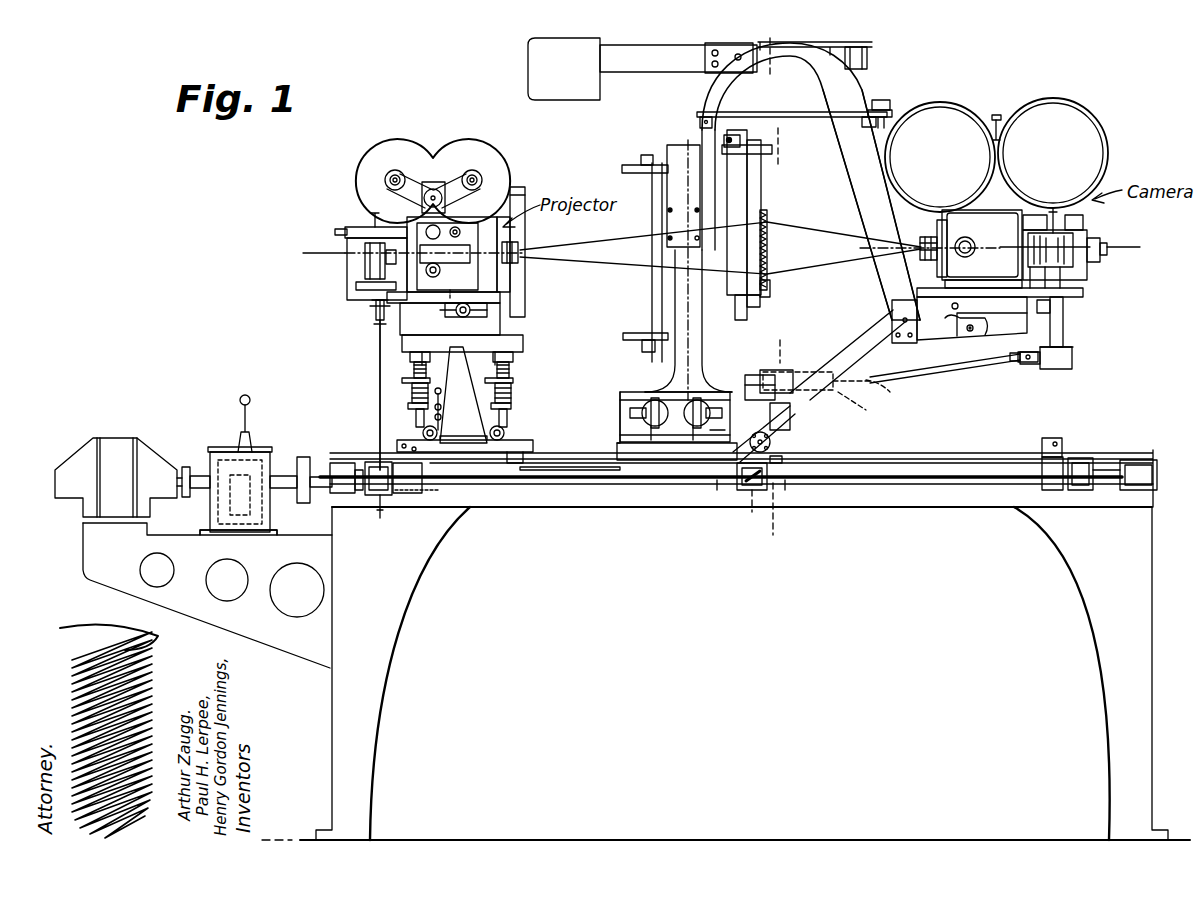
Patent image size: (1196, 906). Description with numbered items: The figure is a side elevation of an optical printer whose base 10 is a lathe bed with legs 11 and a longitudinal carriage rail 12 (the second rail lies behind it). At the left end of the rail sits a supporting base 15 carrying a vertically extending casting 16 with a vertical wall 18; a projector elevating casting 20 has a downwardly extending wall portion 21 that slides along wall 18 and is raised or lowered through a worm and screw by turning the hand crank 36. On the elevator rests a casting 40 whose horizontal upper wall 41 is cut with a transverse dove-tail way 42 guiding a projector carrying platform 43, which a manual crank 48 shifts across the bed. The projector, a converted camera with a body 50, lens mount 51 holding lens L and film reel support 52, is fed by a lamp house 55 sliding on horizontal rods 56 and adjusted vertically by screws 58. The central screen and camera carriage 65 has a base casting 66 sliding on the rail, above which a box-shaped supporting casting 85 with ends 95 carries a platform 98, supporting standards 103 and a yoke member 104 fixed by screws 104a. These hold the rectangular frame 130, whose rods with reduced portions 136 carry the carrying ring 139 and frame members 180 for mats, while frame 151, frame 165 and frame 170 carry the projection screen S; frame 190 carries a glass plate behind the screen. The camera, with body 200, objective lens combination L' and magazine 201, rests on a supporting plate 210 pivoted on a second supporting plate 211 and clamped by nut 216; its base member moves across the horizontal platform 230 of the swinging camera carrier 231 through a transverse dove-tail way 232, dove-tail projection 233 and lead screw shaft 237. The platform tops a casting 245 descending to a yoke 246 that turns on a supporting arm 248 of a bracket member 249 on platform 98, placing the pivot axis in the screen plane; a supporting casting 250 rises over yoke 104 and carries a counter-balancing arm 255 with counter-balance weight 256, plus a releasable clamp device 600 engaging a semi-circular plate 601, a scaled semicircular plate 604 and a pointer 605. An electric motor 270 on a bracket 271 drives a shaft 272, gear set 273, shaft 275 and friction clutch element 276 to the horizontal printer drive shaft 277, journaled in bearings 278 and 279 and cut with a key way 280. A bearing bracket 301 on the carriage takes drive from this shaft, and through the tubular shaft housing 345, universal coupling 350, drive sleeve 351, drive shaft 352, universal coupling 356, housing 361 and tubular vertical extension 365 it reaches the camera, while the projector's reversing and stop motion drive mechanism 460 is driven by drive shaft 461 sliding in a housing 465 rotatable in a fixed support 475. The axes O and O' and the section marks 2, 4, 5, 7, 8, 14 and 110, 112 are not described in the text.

The base of the printer 10 is at (1126, 442).
The legs 11 is at (392, 610).
The carriage rail 12 is at (980, 466).
The section line 14 is at (371, 428).
The supporting base 15 is at (535, 445).
The vertically extending casting 16 is at (443, 393).
The vertical wall 18 is at (779, 131).
The section line 2 is at (419, 361).
The projector elevating casting 20 is at (524, 346).
The downwardly extending wall portion 21 is at (458, 352).
The hand crank 36 is at (442, 417).
The section line 4 is at (497, 284).
The casting 40 is at (414, 324).
The horizontal upper wall 41 is at (372, 305).
The transverse dove-tail way 42 is at (500, 294).
The projector carrying platform 43 is at (376, 326).
The manual crank 48 is at (470, 306).
The section line 5 is at (762, 43).
The body 50 is at (373, 212).
The lens mount 51 is at (519, 240).
The film reel support 52 is at (421, 148).
The lamp house 55 is at (539, 192).
The parallel horizontal rods 56 is at (436, 445).
The screws 58 is at (410, 404).
The central screen and camera carriage 65 is at (612, 393).
The base casting 66 is at (656, 432).
The section line 7 is at (745, 516).
The section line 8 is at (714, 486).
The supporting casting 85 is at (708, 494).
The ends 95 is at (620, 423).
The platform 98 is at (641, 381).
The supporting standards 103 is at (673, 302).
The yoke member 104 is at (725, 91).
The screws 104a is at (697, 212).
The adjusting screw 110 is at (690, 430).
The adjusting screw 112 is at (711, 434).
The rectangular frame 130 is at (677, 156).
The reduced portions 136 is at (773, 150).
The carrying ring 139 is at (735, 186).
The frame 151 is at (755, 319).
The rectangular frame 165 is at (760, 306).
The rectangular frame 170 is at (771, 283).
The frame members 180 is at (717, 177).
The frame 190 is at (652, 283).
The body 200 is at (979, 249).
The magazine 201 is at (1073, 103).
The supporting plate 210 is at (893, 287).
The second supporting plate 211 is at (897, 302).
The clamping nut 216 is at (1064, 309).
The horizontal platform 230 is at (1003, 355).
The swinging camera carrier 231 is at (878, 314).
The transverse dove-tail way 232 is at (943, 318).
The dove-tail projection 233 is at (1007, 324).
The lead screw shaft 237 is at (968, 330).
The casting 245 is at (866, 377).
The yoke 246 is at (803, 420).
The supporting arm 248 is at (795, 432).
The bracket member 249 is at (765, 397).
The supporting casting 250 is at (862, 175).
The counter-balancing arm 255 is at (633, 70).
The counter-balance weight 256 is at (553, 92).
The electric motor 270 is at (115, 437).
The bracket 271 is at (115, 552).
The shaft 272 is at (186, 465).
The gear set 273 is at (221, 438).
The shaft 275 is at (300, 472).
The friction clutch element 276 is at (311, 448).
The horizontal printer drive shaft 277 is at (474, 492).
The bearing 278 is at (320, 497).
The bearing 279 is at (1137, 490).
The key way 280 is at (567, 488).
The bearing bracket 301 is at (781, 463).
The tubular shaft housing 345 is at (805, 372).
The universal coupling 350 is at (868, 408).
The drive sleeve 351 is at (897, 380).
The drive shaft 352 is at (1022, 362).
The universal coupling 356 is at (1044, 366).
The housing 361 is at (1073, 362).
The tubular vertical extension 365 is at (1064, 321).
The reversing and stop motion drive mechanism 460 is at (361, 279).
The drive shaft 461 is at (378, 369).
The housing 465 is at (380, 499).
The fixed support 475 is at (409, 494).
The releasable clamp device 600 is at (891, 104).
The semi-circular plate 601 is at (821, 113).
The semicircular plate 604 is at (866, 63).
The pointer 605 is at (875, 44).
The lens L is at (643, 246).
The objective lens combination L' is at (920, 238).
The optical axis O is at (313, 253).
The camera optical axis O' is at (1011, 247).
The projection screen S is at (781, 220).